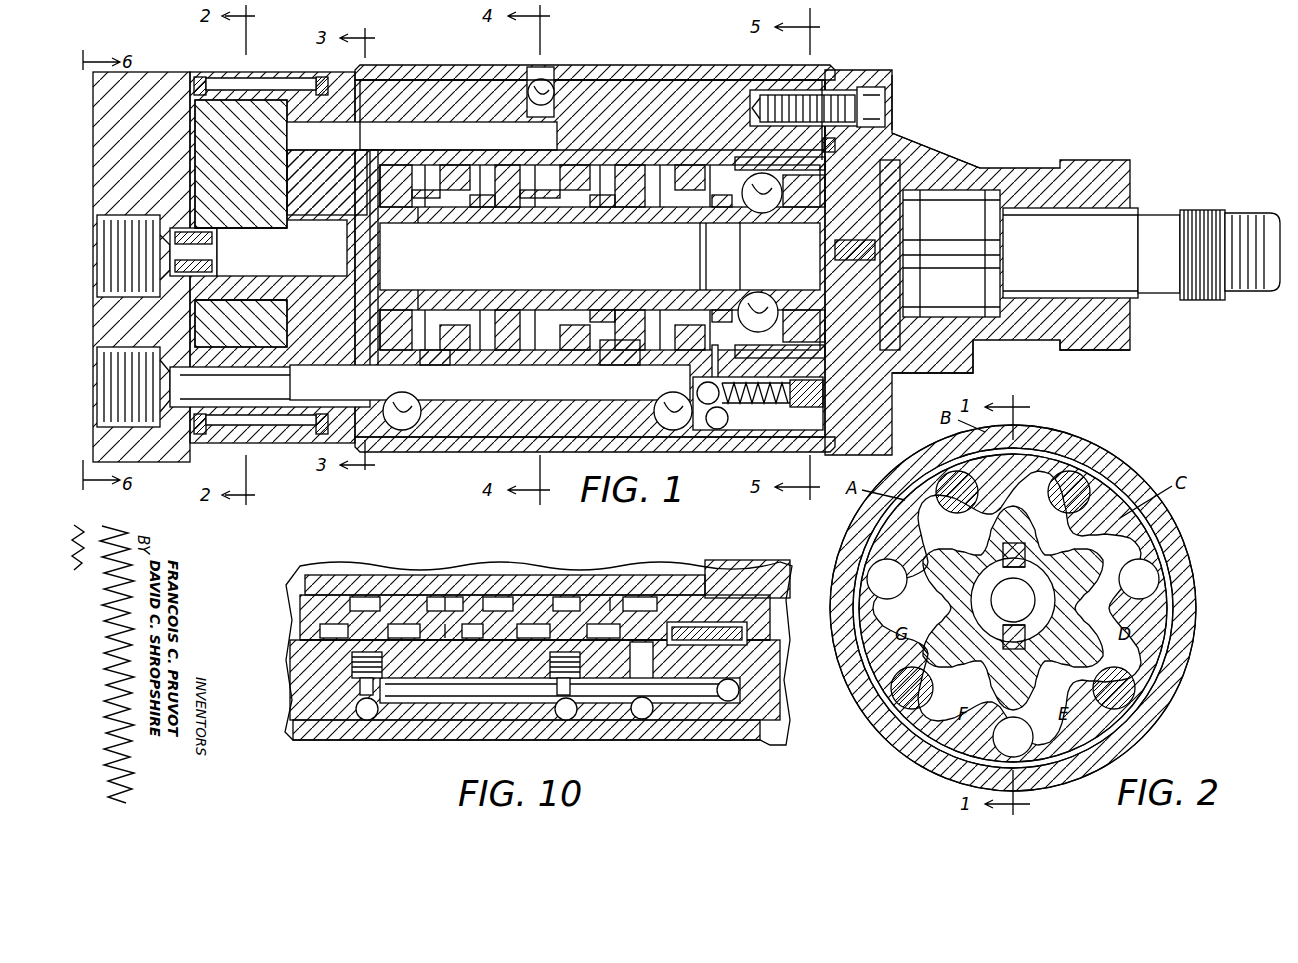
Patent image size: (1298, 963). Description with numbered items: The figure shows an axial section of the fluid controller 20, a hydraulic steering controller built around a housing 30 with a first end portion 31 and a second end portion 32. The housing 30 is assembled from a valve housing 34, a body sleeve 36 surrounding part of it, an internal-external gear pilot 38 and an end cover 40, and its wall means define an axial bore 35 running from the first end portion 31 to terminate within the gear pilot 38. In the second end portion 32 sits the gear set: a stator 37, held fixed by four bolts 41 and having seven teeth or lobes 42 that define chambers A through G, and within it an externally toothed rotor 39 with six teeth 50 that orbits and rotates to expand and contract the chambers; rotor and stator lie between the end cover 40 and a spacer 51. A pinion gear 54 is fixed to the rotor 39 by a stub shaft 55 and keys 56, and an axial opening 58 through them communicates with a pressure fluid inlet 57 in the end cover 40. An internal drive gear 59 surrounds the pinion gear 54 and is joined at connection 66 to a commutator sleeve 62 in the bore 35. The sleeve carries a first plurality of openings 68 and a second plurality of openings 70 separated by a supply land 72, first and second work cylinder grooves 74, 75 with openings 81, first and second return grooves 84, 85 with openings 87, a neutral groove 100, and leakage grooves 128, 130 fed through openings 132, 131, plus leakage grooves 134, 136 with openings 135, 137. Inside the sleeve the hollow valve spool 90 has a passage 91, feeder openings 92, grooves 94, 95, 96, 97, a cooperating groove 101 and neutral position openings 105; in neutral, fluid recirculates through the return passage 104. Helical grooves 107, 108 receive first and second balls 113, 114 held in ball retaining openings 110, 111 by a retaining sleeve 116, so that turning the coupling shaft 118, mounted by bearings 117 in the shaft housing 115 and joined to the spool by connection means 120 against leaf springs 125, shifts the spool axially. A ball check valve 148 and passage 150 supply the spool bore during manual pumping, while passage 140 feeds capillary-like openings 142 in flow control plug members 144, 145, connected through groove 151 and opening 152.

In FIG. 1, the fluid controller 20 is at (884, 46).
In FIG. 1, the housing 30 is at (618, 64).
In FIG. 1, the first end portion 31 is at (836, 70).
In FIG. 1, the second end portion 32 is at (262, 72).
In FIG. 1, the valve housing 34 is at (418, 66).
In FIG. 1, the axial bore 35 is at (660, 160).
In FIG. 1, the body sleeve 36 is at (456, 68).
In FIG. 1, the stator 37 is at (232, 130).
In FIG. 2, the stator 37 is at (1108, 497).
In FIG. 1, the internal-external gear pilot 38 is at (228, 74).
In FIG. 2, the internal-external gear pilot 38 is at (1196, 538).
In FIG. 1, the rotor 39 is at (195, 158).
In FIG. 2, the rotor 39 is at (982, 664).
In FIG. 1, the end cover 40 is at (170, 72).
In FIG. 2, the bolts 41 is at (960, 490).
In FIG. 2, the teeth or lobes 42 is at (1040, 490).
In FIG. 2, the teeth 50 is at (1068, 660).
In FIG. 1, the spacer 51 is at (298, 78).
In FIG. 1, the pinion gear 54 is at (362, 280).
In FIG. 1, the stub shaft 55 is at (292, 230).
In FIG. 2, the stub shaft 55 is at (1035, 602).
In FIG. 1, the keys 56 is at (240, 275).
In FIG. 1, the pressure fluid inlet 57 is at (150, 265).
In FIG. 1, the axial opening 58 is at (328, 251).
In FIG. 1, the internal drive gear 59 is at (340, 165).
In FIG. 1, the commutator sleeve 62 is at (448, 150).
In FIG. 10, the commutator sleeve 62 is at (470, 595).
In FIG. 1, the connection 66 is at (342, 368).
In FIG. 1, the first plurality of openings 68 is at (500, 207).
In FIG. 10, the first plurality of openings 68 is at (462, 624).
In FIG. 1, the second plurality of openings 70 is at (578, 300).
In FIG. 1, the supply land 72 is at (580, 212).
In FIG. 1, the first annular work cylinder groove 74 is at (466, 165).
In FIG. 10, the first annular work cylinder groove 74 is at (400, 597).
In FIG. 1, the second annular work cylinder groove 75 is at (596, 175).
In FIG. 10, the second annular work cylinder groove 75 is at (538, 597).
In FIG. 1, the work cylinder groove openings 81 is at (646, 156).
In FIG. 1, the first annular return groove 84 is at (395, 175).
In FIG. 10, the first annular return groove 84 is at (300, 635).
In FIG. 1, the second annular return groove 85 is at (680, 170).
In FIG. 10, the second annular return groove 85 is at (602, 640).
In FIG. 1, the return groove openings 87 is at (418, 223).
In FIG. 1, the valve spool 90 is at (410, 300).
In FIG. 10, the valve spool 90 is at (360, 575).
In FIG. 1, the passage 91 is at (708, 303).
In FIG. 1, the feeder openings 92 is at (552, 212).
In FIG. 1, the groove 94 is at (478, 223).
In FIG. 1, the groove 95 is at (612, 300).
In FIG. 1, the groove 96 is at (432, 212).
In FIG. 1, the groove 97 is at (664, 212).
In FIG. 1, the neutral groove 100 is at (704, 160).
In FIG. 1, the cooperating groove 101 is at (704, 212).
In FIG. 1, the return passage 104 is at (566, 387).
In FIG. 2, the return passage 104 is at (1020, 745).
In FIG. 1, the neutral position openings 105 is at (728, 223).
In FIG. 1, the first helical groove 107 is at (752, 223).
In FIG. 1, the second helical groove 108 is at (734, 303).
In FIG. 1, the first ball retaining opening 110 is at (778, 200).
In FIG. 1, the second ball retaining opening 111 is at (774, 305).
In FIG. 1, the first ball 113 is at (870, 220).
In FIG. 1, the second ball 114 is at (838, 260).
In FIG. 1, the shaft housing 115 is at (912, 140).
In FIG. 1, the retaining sleeve 116 is at (790, 165).
In FIG. 10, the retaining sleeve 116 is at (750, 633).
In FIG. 1, the bearings 117 is at (890, 378).
In FIG. 1, the coupling shaft 118 is at (1064, 251).
In FIG. 1, the connection means 120 is at (915, 264).
In FIG. 1, the leaf springs 125 is at (895, 222).
In FIG. 1, the leakage groove 128 is at (504, 160).
In FIG. 1, the leakage groove 130 is at (562, 128).
In FIG. 1, the openings 131 is at (620, 223).
In FIG. 1, the openings 132 is at (530, 310).
In FIG. 1, the leakage groove 134 is at (462, 352).
In FIG. 1, the openings 135 is at (432, 365).
In FIG. 1, the leakage groove 136 is at (624, 352).
In FIG. 1, the openings 137 is at (648, 370).
In FIG. 10, the passage 140 is at (447, 703).
In FIG. 10, the capillary-like openings 142 is at (375, 720).
In FIG. 10, the flow control plug member 144 is at (355, 700).
In FIG. 10, the flow control plug member 145 is at (558, 700).
In FIG. 1, the ball check valve 148 is at (714, 445).
In FIG. 1, the passage 150 is at (710, 366).
In FIG. 10, the groove 151 is at (655, 645).
In FIG. 1, the opening 152 is at (728, 175).